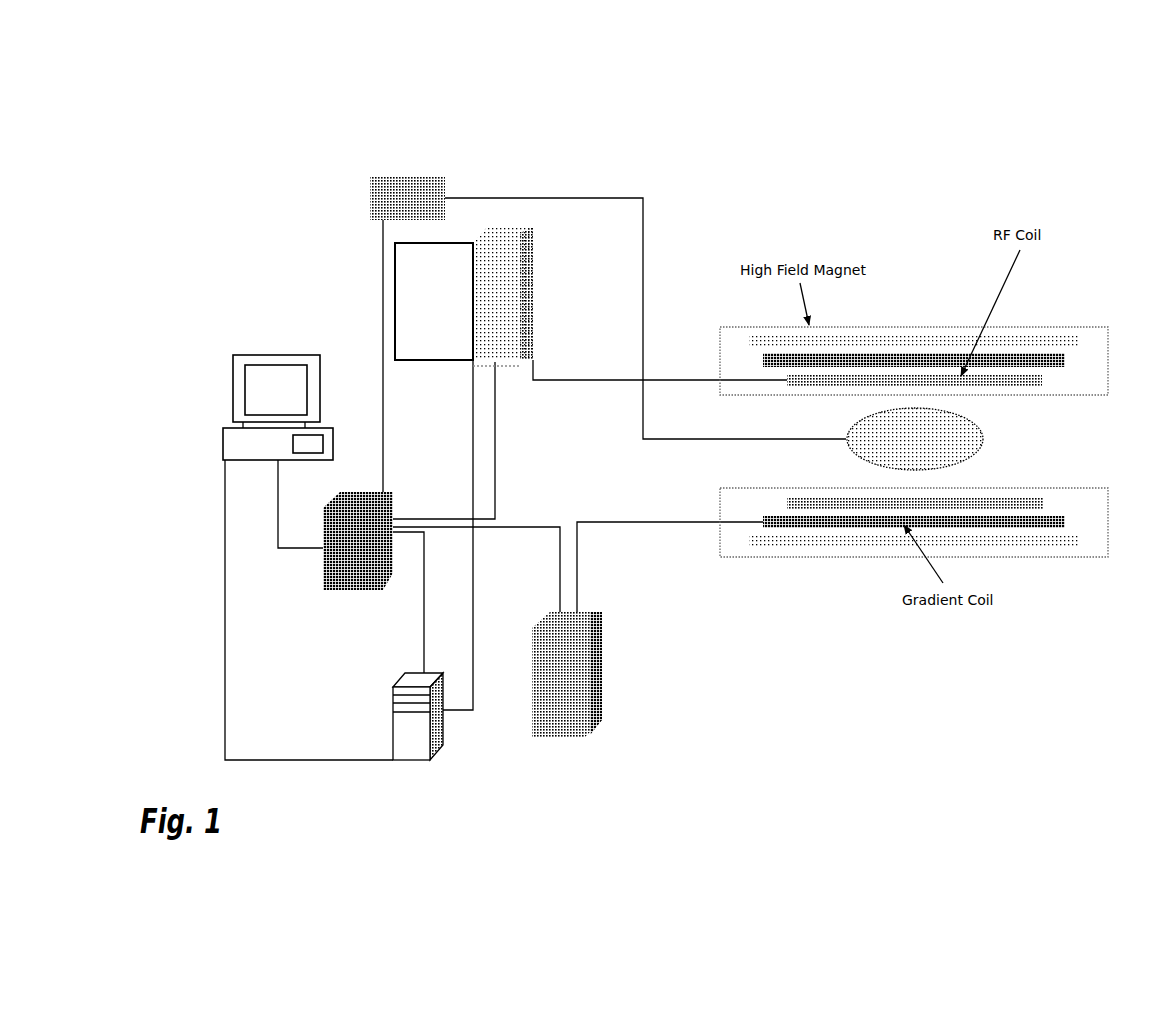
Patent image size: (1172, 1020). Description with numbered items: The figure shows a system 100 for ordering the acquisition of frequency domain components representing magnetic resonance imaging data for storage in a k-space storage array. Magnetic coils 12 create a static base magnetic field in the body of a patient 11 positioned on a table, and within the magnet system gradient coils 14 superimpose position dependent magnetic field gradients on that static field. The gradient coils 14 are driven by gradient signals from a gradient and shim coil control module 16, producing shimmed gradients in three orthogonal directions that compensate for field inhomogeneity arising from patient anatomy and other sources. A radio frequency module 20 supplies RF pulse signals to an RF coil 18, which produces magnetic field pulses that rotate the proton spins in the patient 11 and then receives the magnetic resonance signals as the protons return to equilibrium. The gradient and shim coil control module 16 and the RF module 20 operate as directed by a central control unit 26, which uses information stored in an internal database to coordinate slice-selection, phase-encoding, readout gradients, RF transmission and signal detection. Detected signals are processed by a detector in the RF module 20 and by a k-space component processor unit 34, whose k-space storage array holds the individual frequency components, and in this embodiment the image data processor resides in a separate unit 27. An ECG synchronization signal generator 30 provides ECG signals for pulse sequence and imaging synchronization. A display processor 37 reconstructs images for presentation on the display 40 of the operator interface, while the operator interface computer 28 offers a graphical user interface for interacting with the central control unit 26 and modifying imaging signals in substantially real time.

The system 100 is at (136, 132).
The ECG synchronization signal generator 30 is at (370, 198).
The radio frequency (RF) module 20 is at (520, 242).
The k-space component processor unit 34 is at (395, 285).
The display 40 is at (275, 390).
The computer 28 is at (223, 437).
The display processor 37 is at (305, 443).
The central control unit 26 is at (347, 560).
The separate unit 27 is at (393, 712).
The gradient and shim coil control module 16 is at (595, 635).
The magnetic coils 12 is at (1037, 343).
The gradient coils 14 is at (1063, 362).
The RF coil 18 is at (1042, 380).
The patient 11 is at (960, 447).